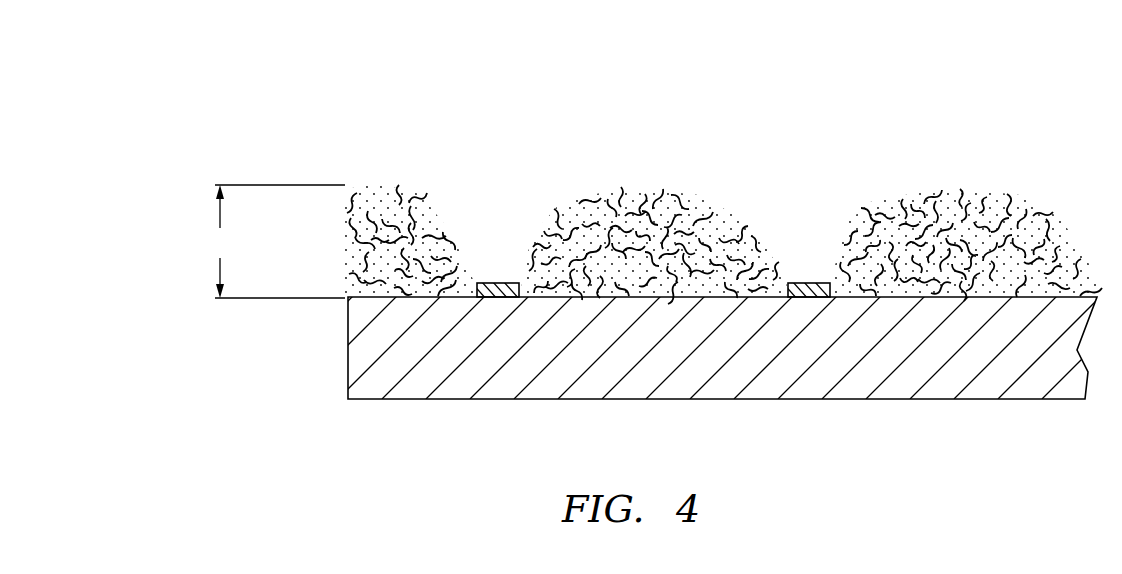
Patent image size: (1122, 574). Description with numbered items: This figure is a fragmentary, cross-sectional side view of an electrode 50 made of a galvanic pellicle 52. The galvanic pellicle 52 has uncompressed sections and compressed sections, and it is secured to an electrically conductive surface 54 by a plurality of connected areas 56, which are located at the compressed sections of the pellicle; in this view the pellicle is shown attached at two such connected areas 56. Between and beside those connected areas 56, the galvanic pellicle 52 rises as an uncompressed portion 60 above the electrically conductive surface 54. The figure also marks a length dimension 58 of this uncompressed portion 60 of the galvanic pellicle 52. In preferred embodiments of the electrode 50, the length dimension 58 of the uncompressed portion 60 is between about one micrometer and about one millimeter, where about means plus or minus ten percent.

The electrode 50 is at (913, 108).
The galvanic pellicle 52 is at (413, 204).
The electrically conductive surface 54 is at (403, 400).
The connected areas 56 is at (500, 283).
The length dimension 58 is at (274, 241).
The uncompressed portion 60 is at (330, 236).